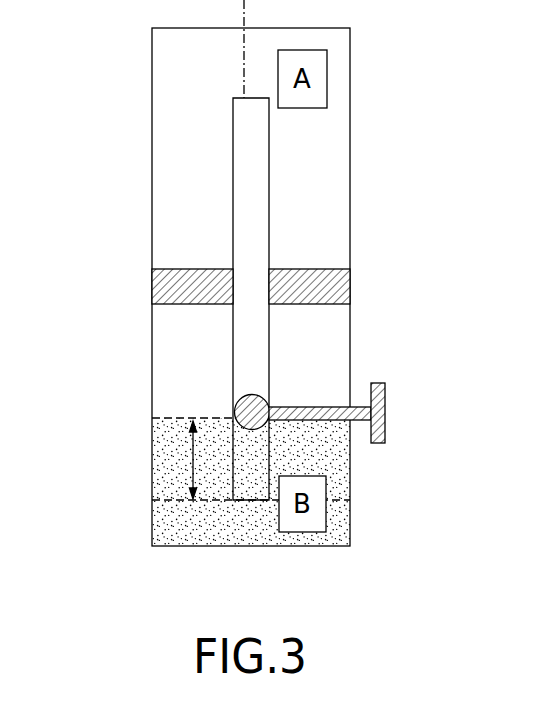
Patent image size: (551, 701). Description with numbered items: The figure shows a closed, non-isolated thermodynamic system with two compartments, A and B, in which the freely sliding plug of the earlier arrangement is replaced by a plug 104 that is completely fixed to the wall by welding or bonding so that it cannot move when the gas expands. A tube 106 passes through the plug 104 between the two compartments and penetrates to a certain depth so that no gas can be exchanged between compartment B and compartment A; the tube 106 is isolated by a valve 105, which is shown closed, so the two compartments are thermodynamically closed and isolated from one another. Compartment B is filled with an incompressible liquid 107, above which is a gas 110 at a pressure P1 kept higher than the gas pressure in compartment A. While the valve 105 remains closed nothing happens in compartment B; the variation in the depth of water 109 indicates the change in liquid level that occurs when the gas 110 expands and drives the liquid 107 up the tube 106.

The plug 104 is at (152, 291).
The valve 105 is at (386, 412).
The tube 106 is at (271, 340).
The incompressible liquid 107 is at (304, 466).
The variation in the depth of water 109 is at (172, 460).
The gas 110 is at (198, 373).